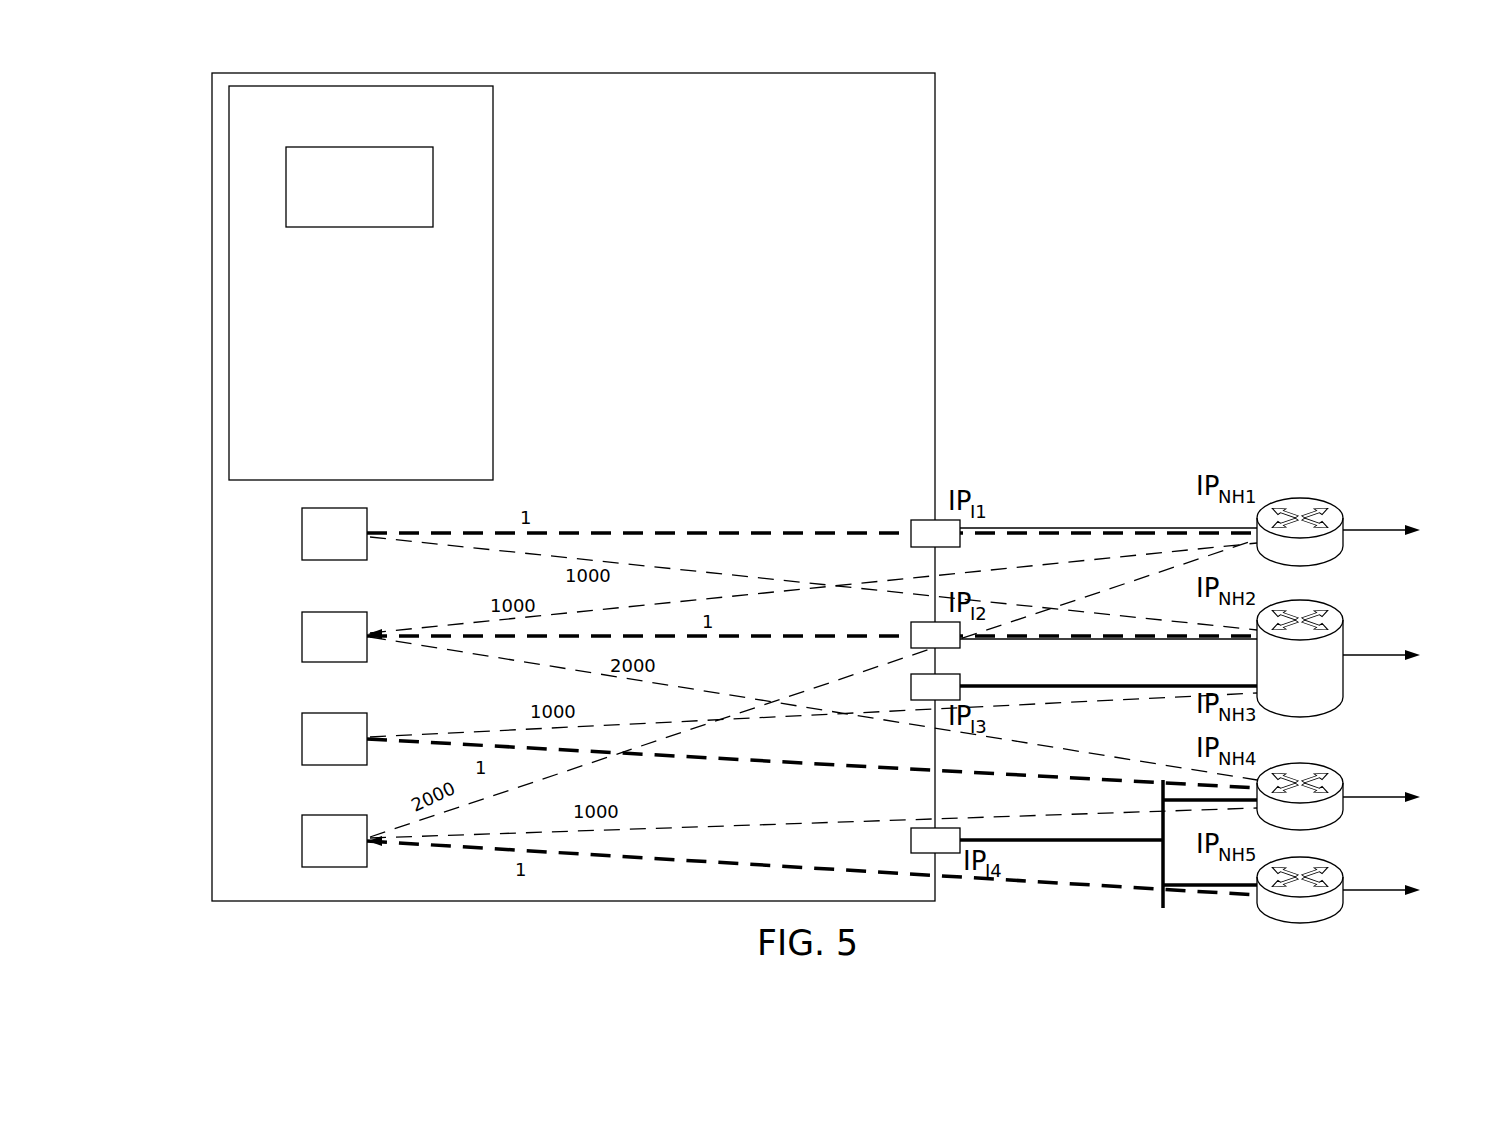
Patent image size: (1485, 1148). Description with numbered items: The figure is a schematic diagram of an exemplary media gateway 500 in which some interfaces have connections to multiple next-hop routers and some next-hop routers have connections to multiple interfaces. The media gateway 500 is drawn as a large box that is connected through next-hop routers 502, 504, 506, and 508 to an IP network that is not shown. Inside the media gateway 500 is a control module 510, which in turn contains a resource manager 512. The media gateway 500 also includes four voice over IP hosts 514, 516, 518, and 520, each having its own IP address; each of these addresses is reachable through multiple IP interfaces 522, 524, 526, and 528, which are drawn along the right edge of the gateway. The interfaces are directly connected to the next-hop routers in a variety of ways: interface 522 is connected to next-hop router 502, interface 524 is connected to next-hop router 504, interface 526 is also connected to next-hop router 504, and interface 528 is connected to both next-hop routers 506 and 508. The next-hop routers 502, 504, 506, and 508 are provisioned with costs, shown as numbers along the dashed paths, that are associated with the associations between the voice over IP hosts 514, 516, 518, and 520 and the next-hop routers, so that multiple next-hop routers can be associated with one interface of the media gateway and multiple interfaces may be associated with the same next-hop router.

The media gateway 500 is at (937, 163).
The control module 510 is at (229, 114).
The resource manager 512 is at (335, 228).
The voice over IP host 514 is at (302, 530).
The voice over IP host 516 is at (302, 632).
The voice over IP host 518 is at (302, 735).
The voice over IP host 520 is at (302, 837).
The IP interface 522 is at (918, 520).
The IP interface 524 is at (911, 628).
The IP interface 526 is at (911, 685).
The IP interface 528 is at (911, 841).
The next-hop router 502 is at (1335, 510).
The next-hop router 504 is at (1335, 612).
The next-hop router 506 is at (1335, 775).
The next-hop router 508 is at (1335, 865).